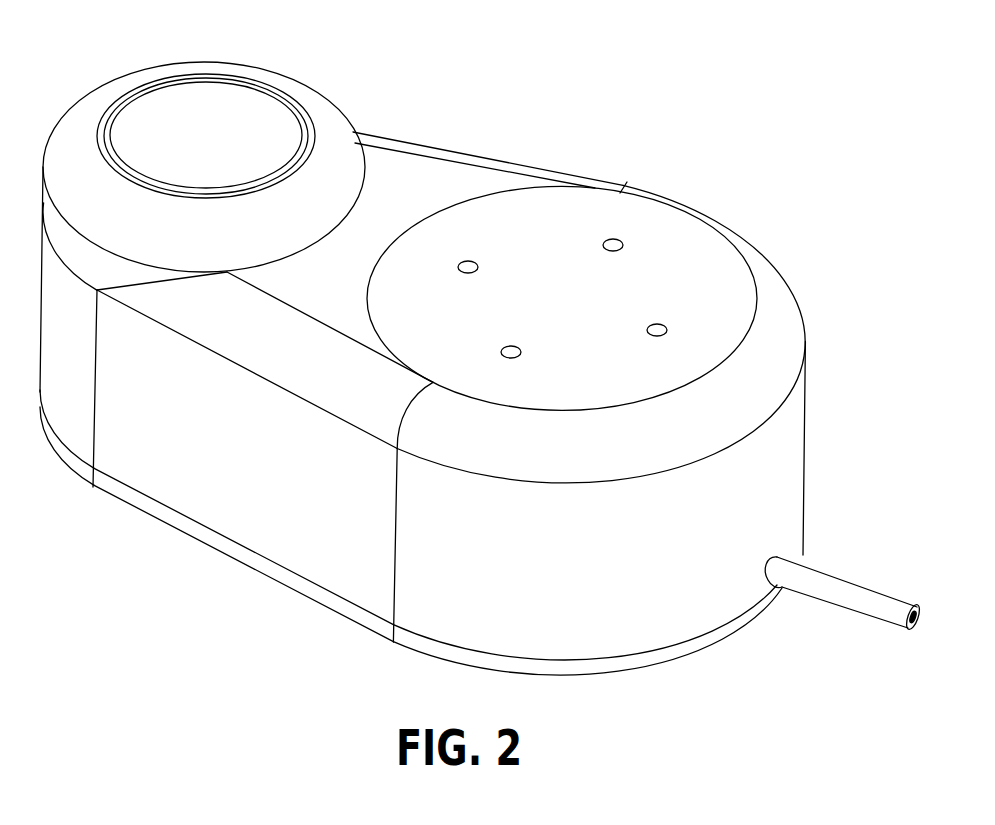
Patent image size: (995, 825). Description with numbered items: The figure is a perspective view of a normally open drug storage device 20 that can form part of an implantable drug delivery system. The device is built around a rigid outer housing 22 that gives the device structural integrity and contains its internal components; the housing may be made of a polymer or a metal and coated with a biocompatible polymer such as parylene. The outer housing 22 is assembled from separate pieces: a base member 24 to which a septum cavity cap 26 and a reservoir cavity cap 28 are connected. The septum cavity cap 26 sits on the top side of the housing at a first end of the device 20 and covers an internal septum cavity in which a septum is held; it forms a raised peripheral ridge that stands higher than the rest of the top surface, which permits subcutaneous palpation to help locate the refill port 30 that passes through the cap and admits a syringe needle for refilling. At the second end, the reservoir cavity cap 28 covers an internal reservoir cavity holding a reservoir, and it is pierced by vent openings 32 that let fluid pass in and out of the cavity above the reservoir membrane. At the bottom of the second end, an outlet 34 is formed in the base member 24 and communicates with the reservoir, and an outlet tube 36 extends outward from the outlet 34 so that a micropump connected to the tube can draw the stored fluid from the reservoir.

The drug storage device 20 is at (464, 358).
The outer housing 22 is at (817, 272).
The base member 24 is at (43, 352).
The septum cavity cap 26 is at (80, 120).
The reservoir cavity cap 28 is at (668, 222).
The refill port 30 is at (289, 74).
The vent openings 32 is at (650, 327).
The outlet 34 is at (775, 558).
The outlet tube 36 is at (852, 588).